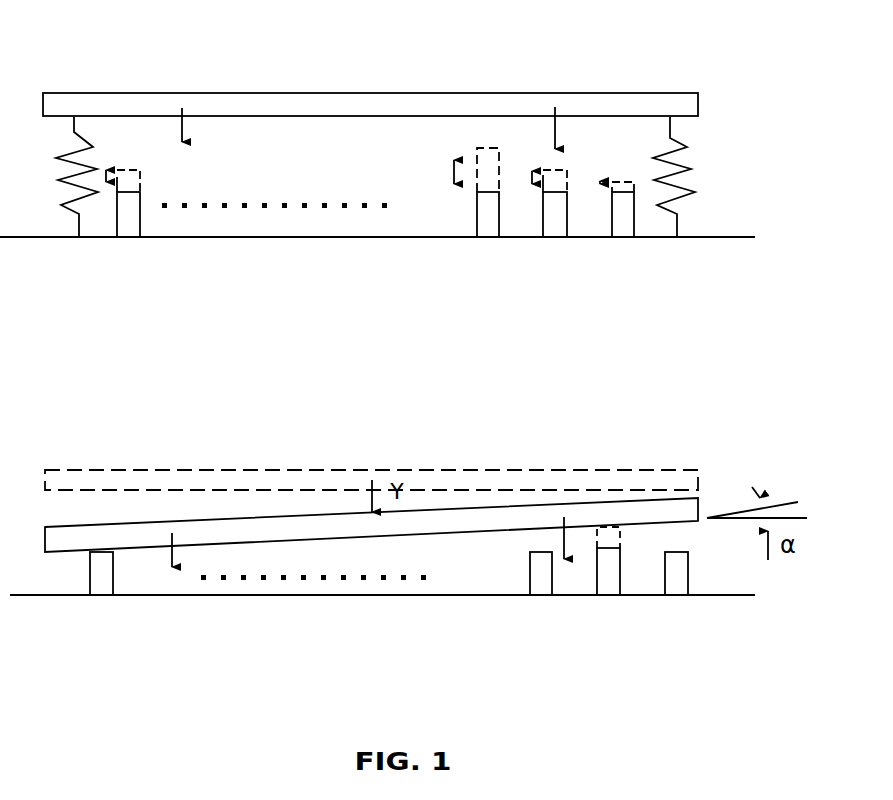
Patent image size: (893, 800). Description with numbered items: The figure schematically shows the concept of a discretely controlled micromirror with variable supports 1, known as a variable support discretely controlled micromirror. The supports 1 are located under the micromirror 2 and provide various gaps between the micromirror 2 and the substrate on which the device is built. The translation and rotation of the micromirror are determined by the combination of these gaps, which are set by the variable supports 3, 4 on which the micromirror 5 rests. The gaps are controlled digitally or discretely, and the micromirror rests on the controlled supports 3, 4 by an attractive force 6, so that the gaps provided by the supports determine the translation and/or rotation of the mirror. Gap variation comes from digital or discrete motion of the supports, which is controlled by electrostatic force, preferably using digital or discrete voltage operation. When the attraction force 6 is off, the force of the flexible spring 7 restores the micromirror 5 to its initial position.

The variable support 1 is at (488, 233).
The micromirror 2 is at (598, 93).
The variable support 3 is at (100, 580).
The variable support 4 is at (595, 597).
The micromirror 5 is at (115, 535).
The attractive force 6 is at (548, 534).
The flexible spring 7 is at (682, 143).